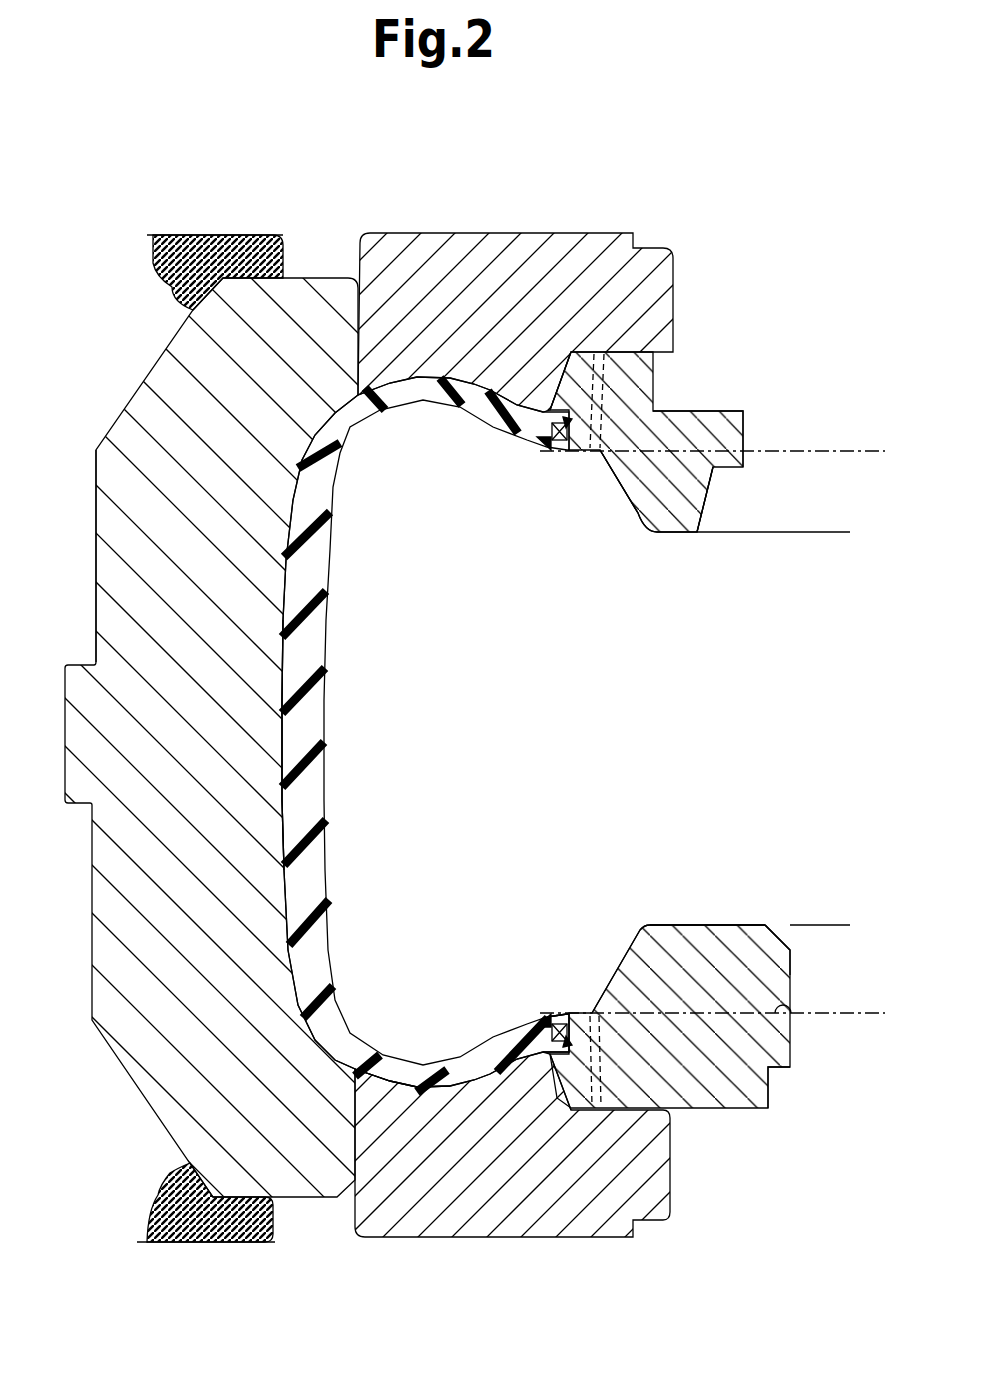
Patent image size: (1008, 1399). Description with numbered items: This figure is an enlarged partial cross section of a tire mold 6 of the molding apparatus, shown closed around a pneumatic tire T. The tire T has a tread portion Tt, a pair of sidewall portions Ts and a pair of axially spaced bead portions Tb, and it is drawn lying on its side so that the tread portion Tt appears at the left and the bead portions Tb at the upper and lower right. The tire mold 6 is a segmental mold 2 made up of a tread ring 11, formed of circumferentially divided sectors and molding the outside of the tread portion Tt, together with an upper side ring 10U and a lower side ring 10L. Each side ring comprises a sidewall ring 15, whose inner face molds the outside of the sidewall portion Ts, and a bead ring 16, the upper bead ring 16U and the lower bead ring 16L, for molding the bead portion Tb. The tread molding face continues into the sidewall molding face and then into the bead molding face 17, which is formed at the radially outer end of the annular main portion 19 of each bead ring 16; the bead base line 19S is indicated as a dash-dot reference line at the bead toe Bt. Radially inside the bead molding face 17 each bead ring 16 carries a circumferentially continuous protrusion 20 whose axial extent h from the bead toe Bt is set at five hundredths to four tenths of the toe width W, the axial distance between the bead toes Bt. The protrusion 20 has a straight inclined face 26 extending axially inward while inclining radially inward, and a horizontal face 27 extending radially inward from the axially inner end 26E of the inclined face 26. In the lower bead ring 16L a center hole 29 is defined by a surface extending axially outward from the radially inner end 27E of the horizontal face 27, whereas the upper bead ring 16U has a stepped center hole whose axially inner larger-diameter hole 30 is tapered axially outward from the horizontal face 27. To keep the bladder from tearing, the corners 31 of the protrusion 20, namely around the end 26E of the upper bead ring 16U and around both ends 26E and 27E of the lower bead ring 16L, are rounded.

The vulcanizing mold 2 is at (220, 676).
The tire mold 6 is at (142, 368).
The tread ring 11 is at (103, 477).
The upper side ring 10U is at (590, 646).
The lower side ring 10L is at (570, 1065).
The sidewall ring 15 is at (650, 253).
The bead ring 16 is at (689, 381).
The upper bead ring 16U is at (680, 410).
The lower bead ring 16L is at (708, 1110).
The bead molding face 17 is at (550, 413).
The annular main portion 19 is at (710, 413).
The bead base line 19S is at (800, 450).
The protrusion 20 is at (627, 493).
The inclined face 26 is at (627, 507).
The axially inner end of the inclined face 26E is at (642, 535).
The horizontal face 27 is at (676, 533).
The radially inner end of the horizontal face 27E is at (697, 534).
The center hole 29 is at (790, 950).
The axially inner larger-diameter hole 30 is at (710, 495).
The corners 31 is at (718, 708).
The pneumatic tire T is at (430, 734).
The tread portion Tt is at (326, 655).
The sidewall portions Ts is at (397, 1060).
The bead portions Tb is at (552, 1012).
The bead toe Bt is at (577, 1012).
The toe width W is at (878, 452).
The axial extent of the protrusion h is at (836, 452).